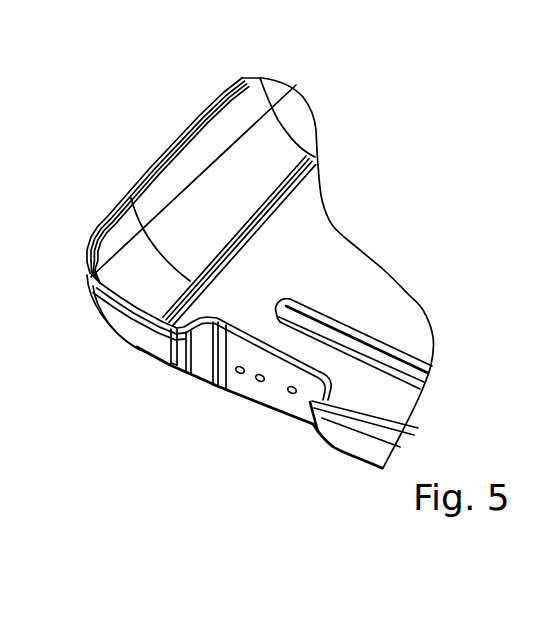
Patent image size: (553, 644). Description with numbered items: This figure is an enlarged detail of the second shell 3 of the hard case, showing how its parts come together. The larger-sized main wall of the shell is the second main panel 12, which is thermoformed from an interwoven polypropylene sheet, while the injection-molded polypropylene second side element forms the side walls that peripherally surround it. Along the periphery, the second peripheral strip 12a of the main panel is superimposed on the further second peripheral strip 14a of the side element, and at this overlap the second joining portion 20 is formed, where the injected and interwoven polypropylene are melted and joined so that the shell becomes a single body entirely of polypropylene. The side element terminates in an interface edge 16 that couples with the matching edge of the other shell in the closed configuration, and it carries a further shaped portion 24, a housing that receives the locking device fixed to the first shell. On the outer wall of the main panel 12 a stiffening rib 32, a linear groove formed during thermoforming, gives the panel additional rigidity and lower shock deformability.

The second shell 3 is at (172, 88).
The further second peripheral strip 14a is at (238, 222).
The second joining portion 20 is at (212, 215).
The second peripheral strip 12a is at (262, 232).
The second main panel 12 is at (338, 281).
The stiffening rib 32 is at (358, 347).
The interface edge 16 is at (145, 348).
The further shaped portion 24 is at (271, 400).